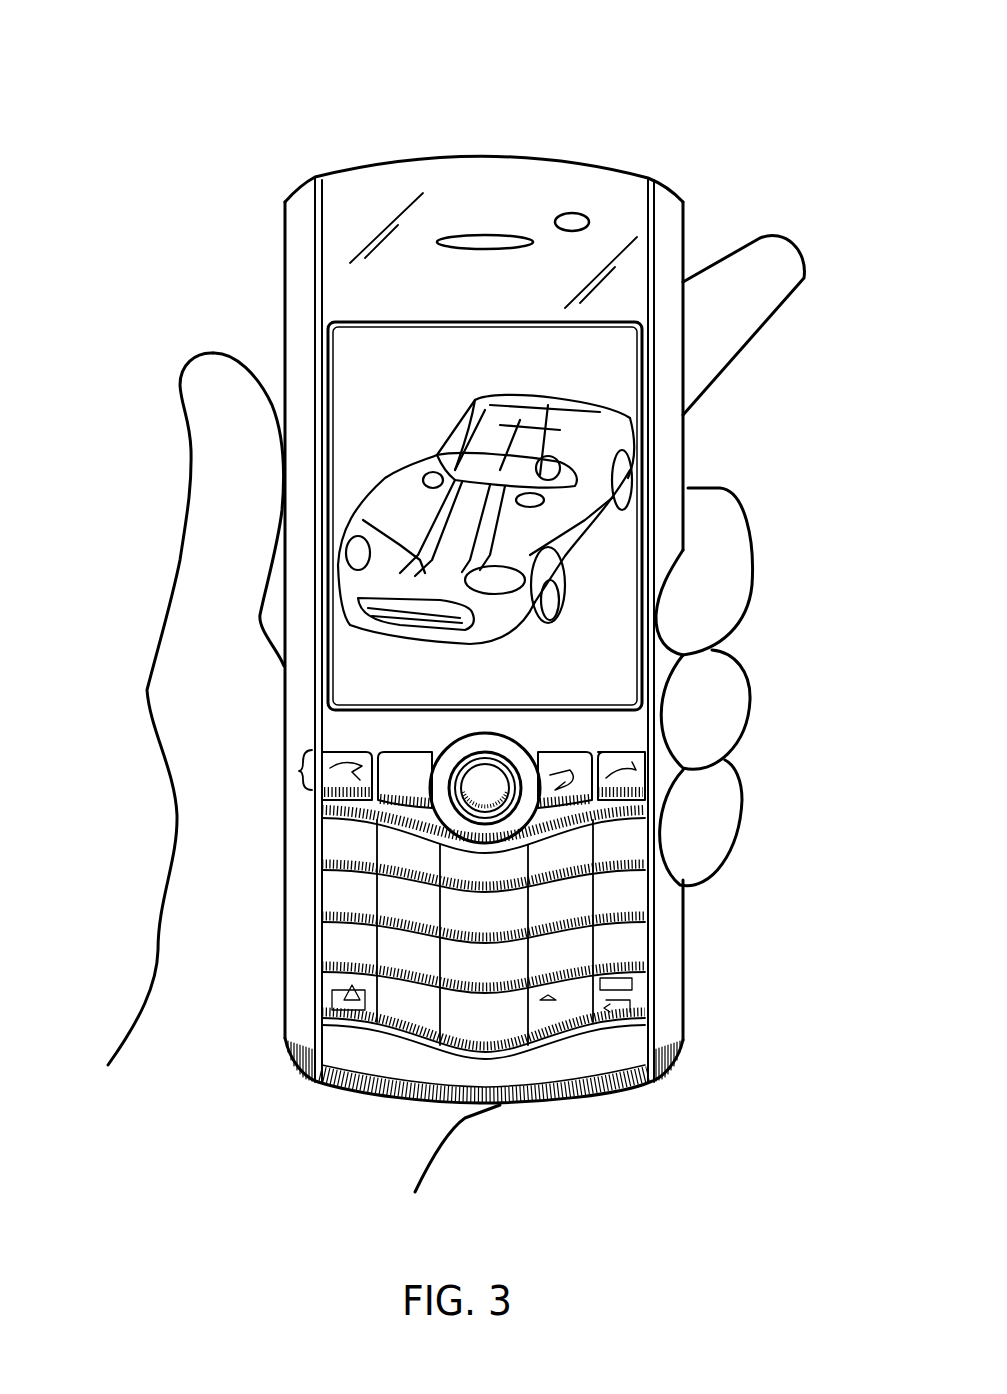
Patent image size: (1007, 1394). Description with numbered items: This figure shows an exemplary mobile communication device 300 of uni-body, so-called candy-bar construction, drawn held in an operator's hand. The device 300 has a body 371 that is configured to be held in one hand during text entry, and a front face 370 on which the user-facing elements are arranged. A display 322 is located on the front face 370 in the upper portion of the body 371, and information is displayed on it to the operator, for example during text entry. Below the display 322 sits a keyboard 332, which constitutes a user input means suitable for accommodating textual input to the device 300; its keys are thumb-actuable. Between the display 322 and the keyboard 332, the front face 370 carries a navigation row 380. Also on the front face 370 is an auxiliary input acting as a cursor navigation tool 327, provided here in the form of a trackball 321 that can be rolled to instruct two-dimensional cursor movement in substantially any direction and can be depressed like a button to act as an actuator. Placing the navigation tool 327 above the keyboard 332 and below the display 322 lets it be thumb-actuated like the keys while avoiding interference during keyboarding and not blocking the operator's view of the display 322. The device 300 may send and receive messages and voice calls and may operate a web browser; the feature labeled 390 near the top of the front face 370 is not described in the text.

The mobile communication device 300 is at (703, 93).
The trackball 321 is at (490, 792).
The display 322 is at (348, 343).
The cursor navigation tool 327 is at (517, 807).
The keyboard 332 is at (503, 1059).
The front face 370 is at (664, 207).
The body 371 is at (284, 210).
The navigation row 380 is at (298, 771).
The indicator light 390 is at (572, 212).